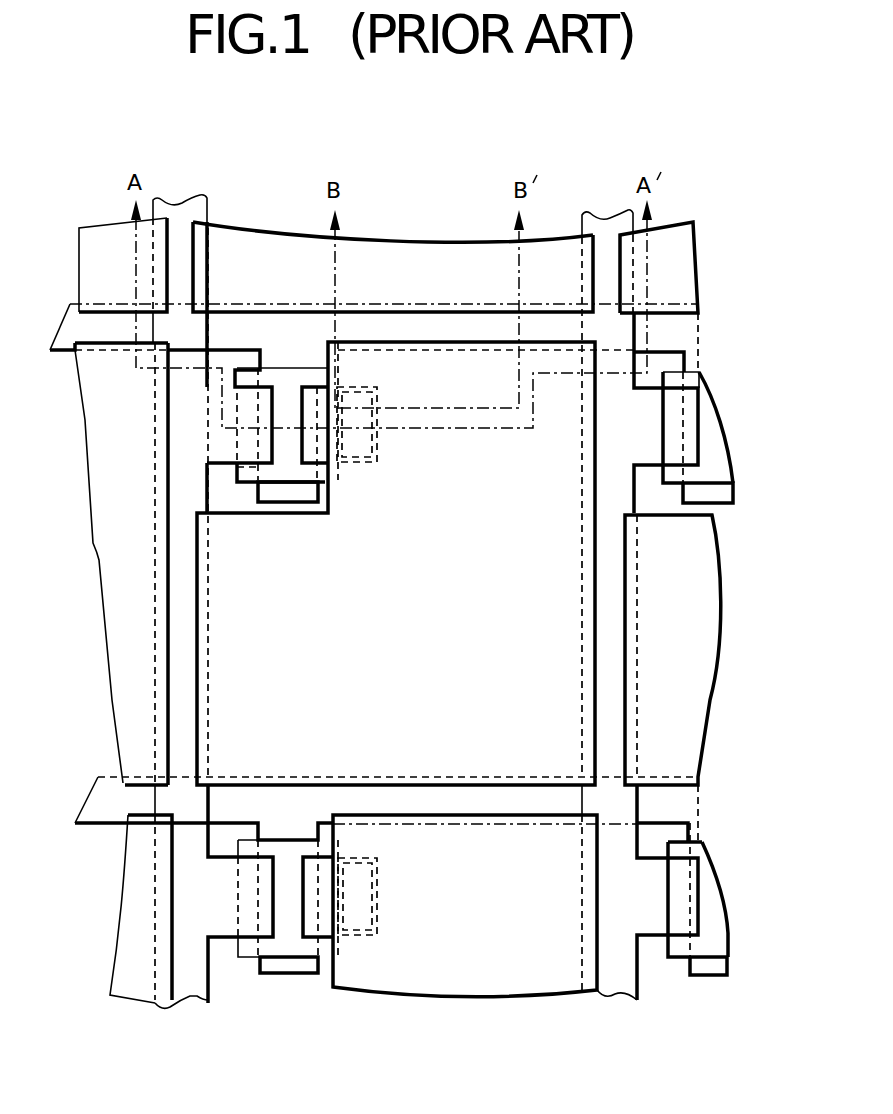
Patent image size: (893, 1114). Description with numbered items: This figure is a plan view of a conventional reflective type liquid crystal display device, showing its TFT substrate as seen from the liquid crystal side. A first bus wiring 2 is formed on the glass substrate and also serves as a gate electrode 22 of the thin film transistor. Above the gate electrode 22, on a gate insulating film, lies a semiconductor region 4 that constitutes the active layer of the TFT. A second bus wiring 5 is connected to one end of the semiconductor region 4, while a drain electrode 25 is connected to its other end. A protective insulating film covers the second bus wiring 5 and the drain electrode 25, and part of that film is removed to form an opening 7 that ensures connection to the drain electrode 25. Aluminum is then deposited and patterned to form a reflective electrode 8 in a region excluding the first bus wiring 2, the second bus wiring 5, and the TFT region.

The first bus wiring 2 is at (540, 330).
The semiconductor region 4 is at (273, 368).
The second bus wiring 5 is at (604, 212).
The opening 7 is at (358, 388).
The reflective electrode 8 is at (233, 786).
The gate electrode 22 is at (293, 974).
The drain electrode 25 is at (377, 902).